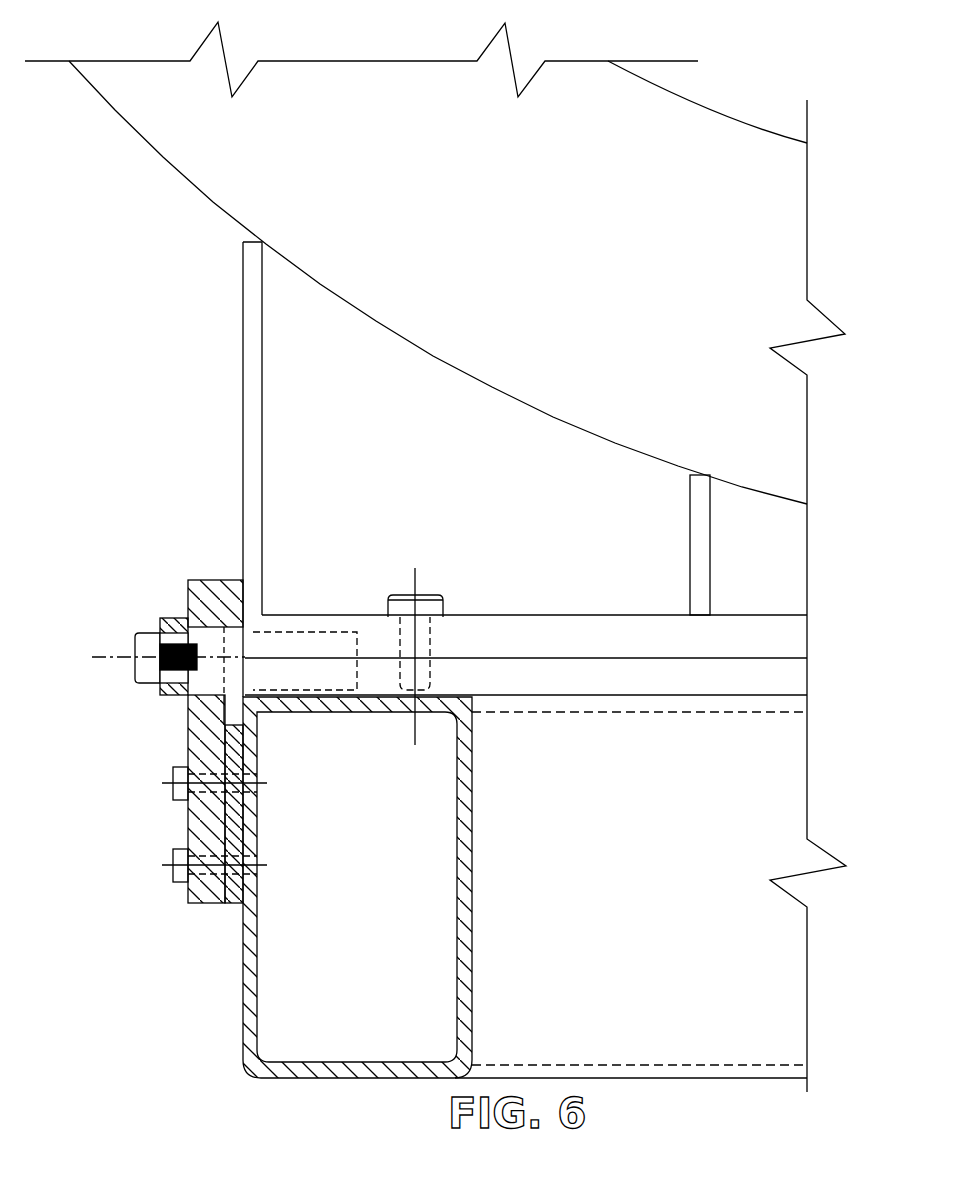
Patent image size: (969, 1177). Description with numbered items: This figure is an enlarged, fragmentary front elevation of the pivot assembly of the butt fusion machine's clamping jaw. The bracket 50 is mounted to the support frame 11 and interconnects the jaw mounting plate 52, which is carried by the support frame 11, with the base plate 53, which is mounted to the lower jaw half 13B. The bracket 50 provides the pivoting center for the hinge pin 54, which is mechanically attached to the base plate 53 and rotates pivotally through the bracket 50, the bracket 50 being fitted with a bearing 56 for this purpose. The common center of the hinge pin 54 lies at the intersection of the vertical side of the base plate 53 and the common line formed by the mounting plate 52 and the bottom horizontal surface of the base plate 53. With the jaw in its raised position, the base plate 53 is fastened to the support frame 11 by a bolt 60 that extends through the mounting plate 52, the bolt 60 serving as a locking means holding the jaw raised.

The support frame 11 is at (262, 1020).
The lower jaw half 13B is at (200, 153).
The bracket 50 is at (188, 818).
The jaw mounting plate 52 is at (788, 675).
The base plate 53 is at (750, 632).
The hinge pin 54 is at (232, 627).
The bearing 56 is at (190, 622).
The bolt 60 is at (408, 600).